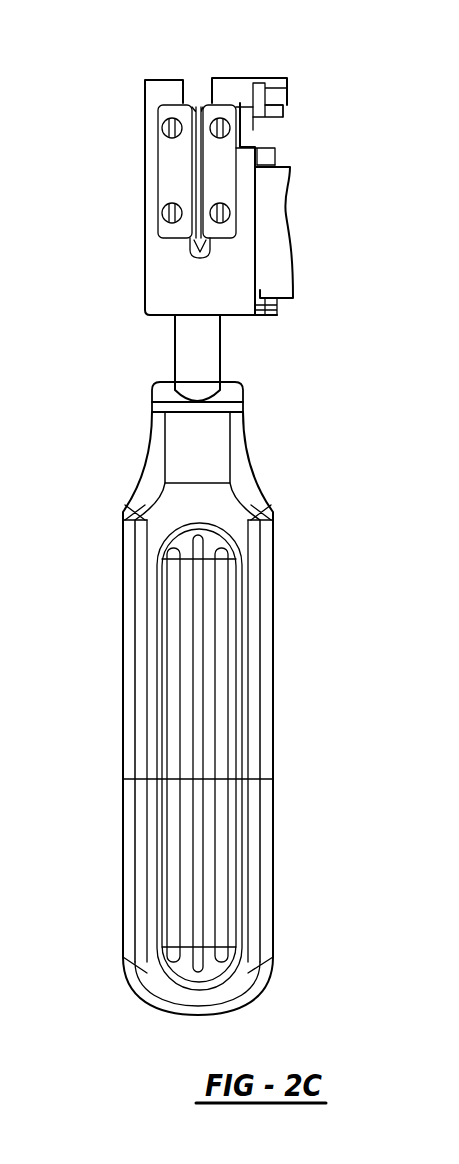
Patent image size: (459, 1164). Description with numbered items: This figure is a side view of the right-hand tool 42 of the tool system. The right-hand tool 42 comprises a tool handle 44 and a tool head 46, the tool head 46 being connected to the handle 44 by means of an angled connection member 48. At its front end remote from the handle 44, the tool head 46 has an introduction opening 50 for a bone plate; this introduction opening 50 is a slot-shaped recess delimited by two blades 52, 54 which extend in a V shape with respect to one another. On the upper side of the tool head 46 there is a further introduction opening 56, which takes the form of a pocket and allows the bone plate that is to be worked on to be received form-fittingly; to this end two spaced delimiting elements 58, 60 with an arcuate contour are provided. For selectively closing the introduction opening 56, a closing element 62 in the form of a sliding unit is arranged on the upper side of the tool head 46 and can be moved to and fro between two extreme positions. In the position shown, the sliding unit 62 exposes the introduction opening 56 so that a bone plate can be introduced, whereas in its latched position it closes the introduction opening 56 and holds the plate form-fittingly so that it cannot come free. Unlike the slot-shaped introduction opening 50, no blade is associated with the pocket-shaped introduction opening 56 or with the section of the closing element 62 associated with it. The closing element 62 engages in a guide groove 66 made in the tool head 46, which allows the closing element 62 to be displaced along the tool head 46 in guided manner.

The right-hand tool 42 is at (323, 527).
The tool handle 44 is at (160, 517).
The tool head 46 is at (168, 291).
The angled connection member 48 is at (203, 352).
The introduction opening 50 is at (193, 88).
The blade 52 is at (194, 154).
The blade 54 is at (196, 178).
The introduction opening 56 is at (262, 132).
The delimiting element 58 is at (277, 116).
The delimiting element 60 is at (274, 147).
The closing element 62 is at (268, 248).
The guide groove 66 is at (278, 307).